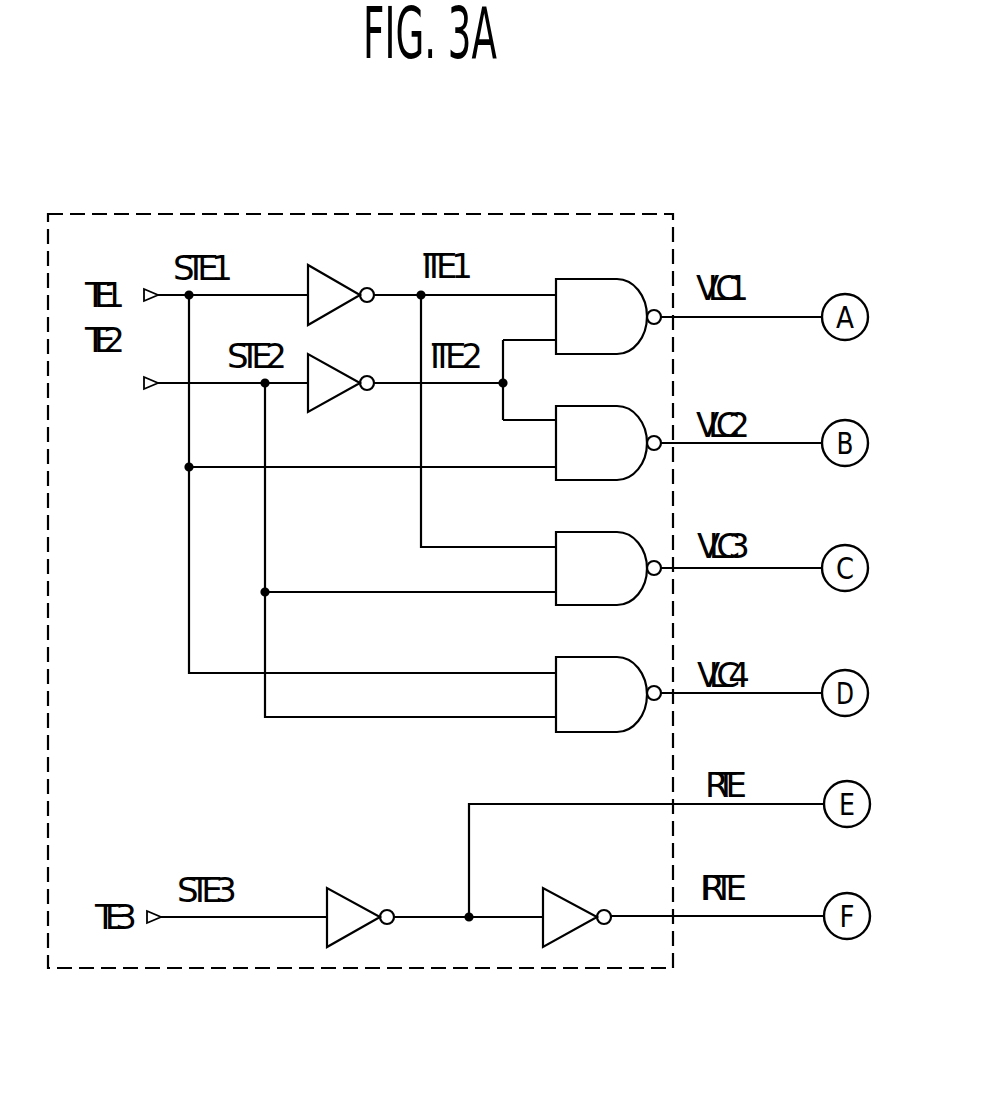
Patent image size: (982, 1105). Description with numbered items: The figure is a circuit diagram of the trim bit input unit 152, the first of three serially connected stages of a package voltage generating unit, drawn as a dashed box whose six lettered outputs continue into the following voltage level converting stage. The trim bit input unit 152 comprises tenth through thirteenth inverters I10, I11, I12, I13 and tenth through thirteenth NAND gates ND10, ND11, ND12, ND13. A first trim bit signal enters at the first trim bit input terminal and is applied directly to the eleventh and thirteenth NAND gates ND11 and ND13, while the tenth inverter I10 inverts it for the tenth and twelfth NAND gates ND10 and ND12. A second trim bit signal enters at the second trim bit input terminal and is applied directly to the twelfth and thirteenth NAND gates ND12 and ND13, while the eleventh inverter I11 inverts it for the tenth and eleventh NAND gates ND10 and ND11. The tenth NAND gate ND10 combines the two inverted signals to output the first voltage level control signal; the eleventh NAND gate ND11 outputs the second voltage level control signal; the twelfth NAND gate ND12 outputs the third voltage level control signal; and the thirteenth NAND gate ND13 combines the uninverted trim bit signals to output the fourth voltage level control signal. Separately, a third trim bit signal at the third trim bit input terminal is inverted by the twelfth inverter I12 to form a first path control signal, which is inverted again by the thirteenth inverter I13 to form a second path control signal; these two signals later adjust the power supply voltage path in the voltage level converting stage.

The trim bit input unit 152 is at (467, 968).
The tenth inverter I10 is at (341, 284).
The eleventh inverter I11 is at (341, 371).
The twelfth inverter I12 is at (360, 904).
The thirteenth inverter I13 is at (577, 904).
The tenth NAND gate ND10 is at (608, 316).
The eleventh NAND gate ND11 is at (608, 443).
The twelfth NAND gate ND12 is at (608, 568).
The thirteenth NAND gate ND13 is at (608, 694).